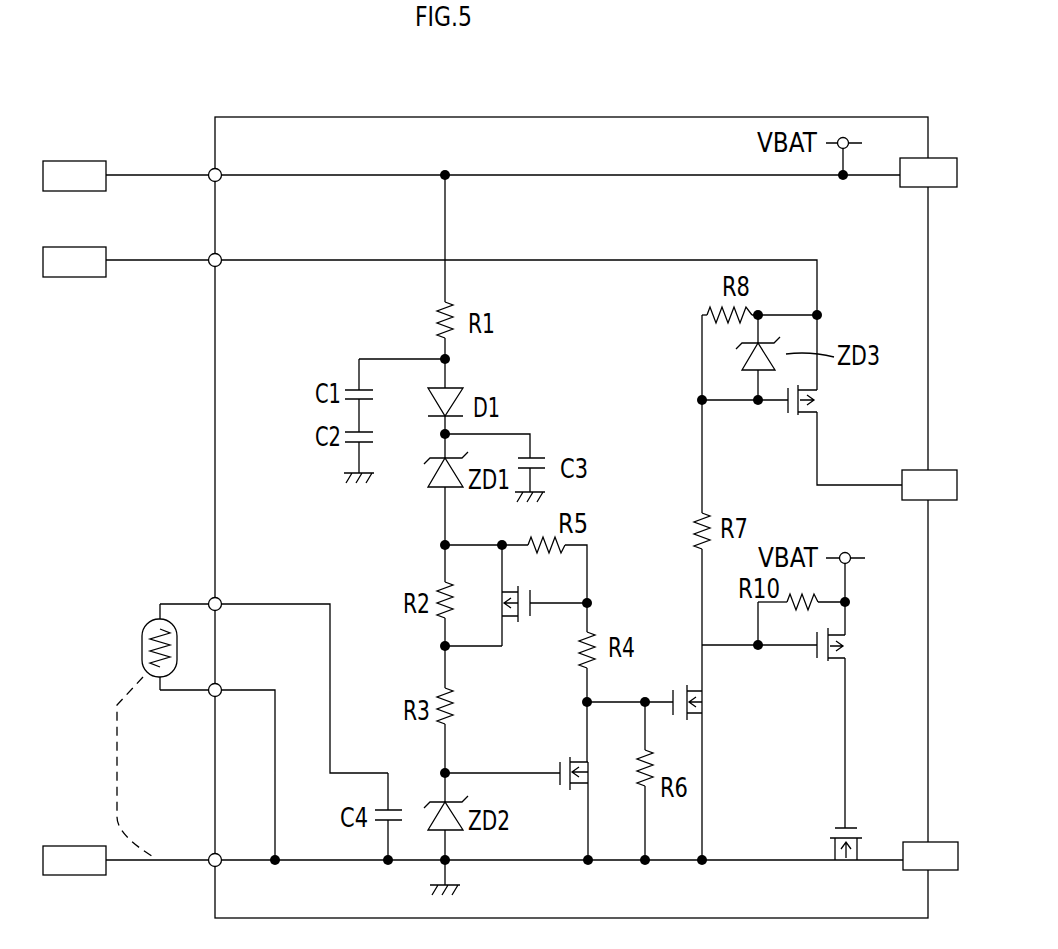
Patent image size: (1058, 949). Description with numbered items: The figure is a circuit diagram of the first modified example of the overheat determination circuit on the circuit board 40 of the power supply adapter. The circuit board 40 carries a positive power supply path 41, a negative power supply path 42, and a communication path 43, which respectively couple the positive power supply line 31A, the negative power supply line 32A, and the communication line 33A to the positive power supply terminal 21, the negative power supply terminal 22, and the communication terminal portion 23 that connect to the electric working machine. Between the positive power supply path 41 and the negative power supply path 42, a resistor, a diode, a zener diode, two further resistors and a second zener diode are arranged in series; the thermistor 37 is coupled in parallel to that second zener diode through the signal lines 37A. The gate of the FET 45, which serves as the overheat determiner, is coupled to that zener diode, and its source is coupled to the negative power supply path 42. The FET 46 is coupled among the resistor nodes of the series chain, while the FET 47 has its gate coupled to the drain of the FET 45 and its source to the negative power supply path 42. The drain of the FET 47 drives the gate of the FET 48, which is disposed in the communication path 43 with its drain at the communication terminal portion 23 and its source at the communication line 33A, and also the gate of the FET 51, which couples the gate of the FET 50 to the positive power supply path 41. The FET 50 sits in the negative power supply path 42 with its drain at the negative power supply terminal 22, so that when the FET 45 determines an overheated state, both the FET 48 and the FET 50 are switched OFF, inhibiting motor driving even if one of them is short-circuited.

The circuit board 40 is at (333, 116).
The positive power supply line 31A is at (152, 173).
The communication line 33A is at (152, 258).
The negative power supply line 32A is at (158, 862).
The thermistor 37 is at (143, 627).
The signal lines 37A is at (183, 602).
The positive power supply path 41 is at (607, 174).
The communication path 43 is at (607, 259).
The negative power supply path 42 is at (782, 858).
The positive power supply terminal 21 is at (912, 160).
The negative power supply terminal 22 is at (915, 845).
The communication terminal portion 23 is at (912, 472).
The FET 45 is at (516, 764).
The FET 46 is at (544, 599).
The FET 47 is at (709, 752).
The FET 48 is at (775, 402).
The FET 50 is at (833, 833).
The FET 51 is at (793, 715).